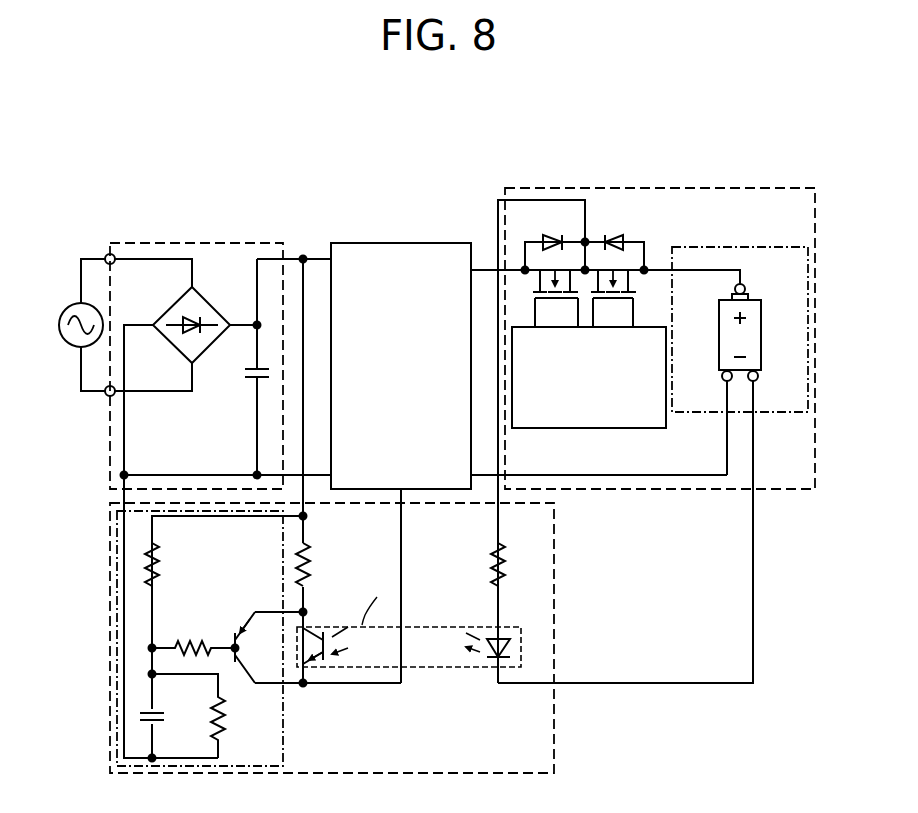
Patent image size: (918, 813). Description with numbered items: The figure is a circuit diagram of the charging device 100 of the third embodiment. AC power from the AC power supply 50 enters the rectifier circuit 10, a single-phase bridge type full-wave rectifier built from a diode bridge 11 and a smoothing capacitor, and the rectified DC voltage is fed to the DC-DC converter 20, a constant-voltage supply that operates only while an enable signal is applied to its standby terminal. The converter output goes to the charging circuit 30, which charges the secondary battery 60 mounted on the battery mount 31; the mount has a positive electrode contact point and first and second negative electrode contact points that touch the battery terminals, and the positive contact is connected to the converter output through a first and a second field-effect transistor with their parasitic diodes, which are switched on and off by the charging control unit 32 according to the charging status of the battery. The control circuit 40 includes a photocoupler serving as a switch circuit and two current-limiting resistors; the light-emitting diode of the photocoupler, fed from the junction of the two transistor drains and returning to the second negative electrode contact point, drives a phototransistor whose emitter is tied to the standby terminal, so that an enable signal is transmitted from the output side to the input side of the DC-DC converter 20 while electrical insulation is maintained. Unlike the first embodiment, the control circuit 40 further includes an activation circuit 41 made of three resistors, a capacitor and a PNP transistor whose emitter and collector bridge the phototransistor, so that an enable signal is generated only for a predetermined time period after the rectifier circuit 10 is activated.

The charging device 100 is at (472, 156).
The rectifier circuit 10 is at (245, 242).
The diode bridge 11 is at (206, 300).
The DC-DC converter 20 is at (400, 243).
The charging circuit 30 is at (733, 188).
The battery mount 31 is at (753, 247).
The charging control unit 32 is at (573, 428).
The control circuit 40 is at (557, 538).
The activation circuit 41 is at (283, 717).
The AC power supply 50 is at (65, 303).
The secondary battery 60 is at (747, 332).